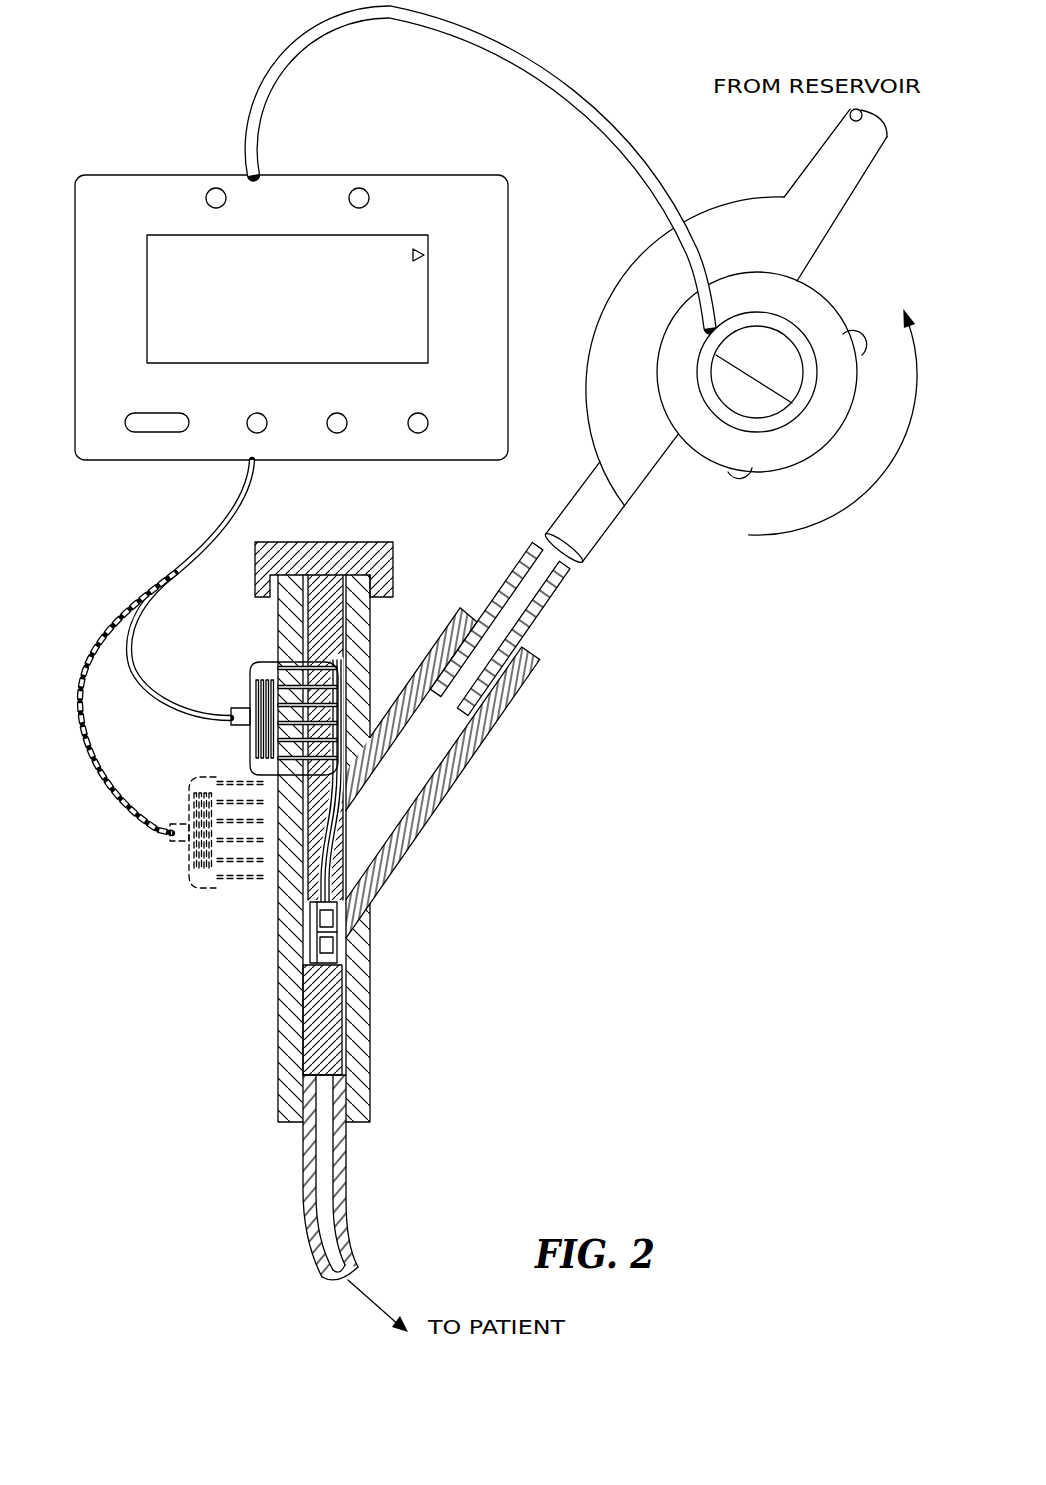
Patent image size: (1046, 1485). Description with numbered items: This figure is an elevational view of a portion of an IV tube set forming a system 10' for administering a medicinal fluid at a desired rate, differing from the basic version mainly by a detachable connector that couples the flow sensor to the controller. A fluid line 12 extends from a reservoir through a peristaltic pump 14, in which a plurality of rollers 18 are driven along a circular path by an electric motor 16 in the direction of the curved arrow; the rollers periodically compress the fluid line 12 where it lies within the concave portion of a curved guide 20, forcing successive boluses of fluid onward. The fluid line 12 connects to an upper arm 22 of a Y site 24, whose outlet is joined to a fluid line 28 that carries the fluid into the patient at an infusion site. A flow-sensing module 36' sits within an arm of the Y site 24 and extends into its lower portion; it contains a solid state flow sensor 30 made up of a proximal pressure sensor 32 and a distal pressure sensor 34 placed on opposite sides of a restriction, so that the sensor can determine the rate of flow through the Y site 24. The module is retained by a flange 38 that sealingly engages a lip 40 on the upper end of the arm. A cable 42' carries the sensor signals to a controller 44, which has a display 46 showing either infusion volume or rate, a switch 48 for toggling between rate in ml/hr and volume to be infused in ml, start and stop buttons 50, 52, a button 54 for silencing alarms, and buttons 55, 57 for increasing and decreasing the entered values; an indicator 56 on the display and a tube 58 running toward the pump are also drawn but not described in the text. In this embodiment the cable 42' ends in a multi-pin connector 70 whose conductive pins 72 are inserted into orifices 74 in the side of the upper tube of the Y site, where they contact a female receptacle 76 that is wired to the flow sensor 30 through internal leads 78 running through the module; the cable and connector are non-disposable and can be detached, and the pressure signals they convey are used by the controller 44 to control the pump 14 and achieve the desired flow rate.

The system 10' is at (108, 1132).
The fluid line 12 is at (866, 170).
The peristaltic pump 14 is at (645, 485).
The electric motor 16 is at (782, 418).
The rollers 18 is at (858, 323).
The curved guide 20 is at (588, 389).
The upper arm 22 is at (447, 793).
The Y site 24 is at (370, 1040).
The fluid line 28 is at (348, 1182).
The solid state flow sensor 30 is at (310, 940).
The proximal pressure sensor 32 is at (334, 917).
The distal pressure sensor 34 is at (334, 945).
The flow-sensing module 36' is at (289, 1020).
The flange 38 is at (256, 594).
The lip 40 is at (378, 577).
The cable 42' is at (166, 646).
The controller 44 is at (213, 460).
The display 46 is at (268, 323).
The switch 48 is at (140, 434).
The start button 50 is at (260, 434).
The stop button 52 is at (338, 434).
The alarm silencing button 54 is at (422, 434).
The increase button 55 is at (207, 190).
The indicator 56 is at (424, 250).
The decrease button 57 is at (369, 189).
The pump tubing 58 is at (475, 33).
The multi-pin connector 70 is at (251, 690).
The conductive pins 72 is at (242, 781).
The orifices 74 is at (278, 659).
The female receptacle 76 is at (343, 654).
The internal leads 78 is at (337, 850).